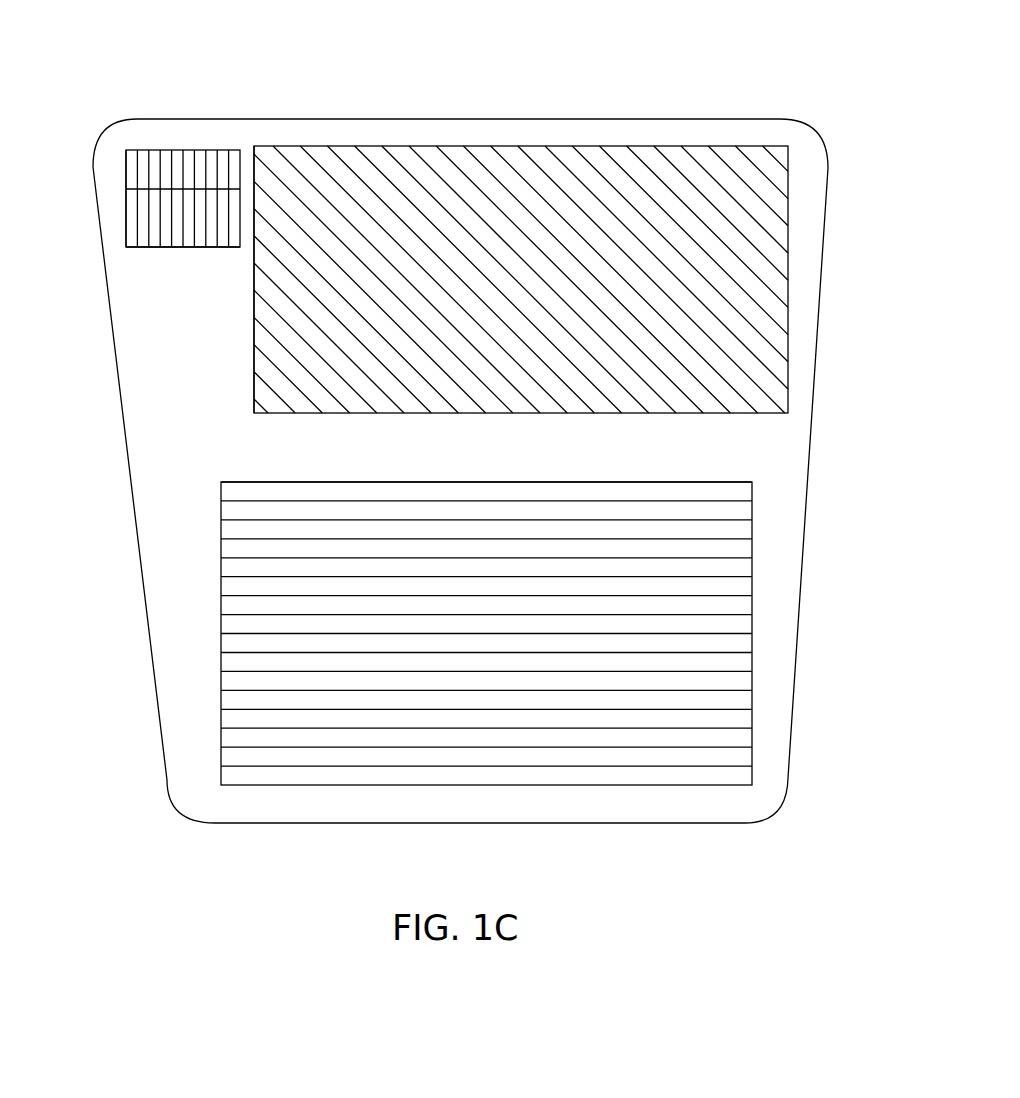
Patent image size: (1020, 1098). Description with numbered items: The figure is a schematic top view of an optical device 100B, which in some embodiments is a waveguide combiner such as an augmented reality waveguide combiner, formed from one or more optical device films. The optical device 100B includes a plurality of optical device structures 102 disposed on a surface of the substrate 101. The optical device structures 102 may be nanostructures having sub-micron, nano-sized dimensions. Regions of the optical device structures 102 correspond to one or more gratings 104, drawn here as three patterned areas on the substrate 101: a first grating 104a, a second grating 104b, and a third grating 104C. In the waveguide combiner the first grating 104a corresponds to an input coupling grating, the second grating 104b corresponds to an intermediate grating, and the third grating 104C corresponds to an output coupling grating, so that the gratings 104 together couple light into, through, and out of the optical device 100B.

The optical device 100B is at (763, 50).
The substrate 101 is at (797, 442).
The optical device structures 102 is at (768, 218).
The gratings 104 is at (229, 249).
The first grating 104a is at (128, 250).
The second grating 104b is at (254, 378).
The third grating 104C is at (494, 482).